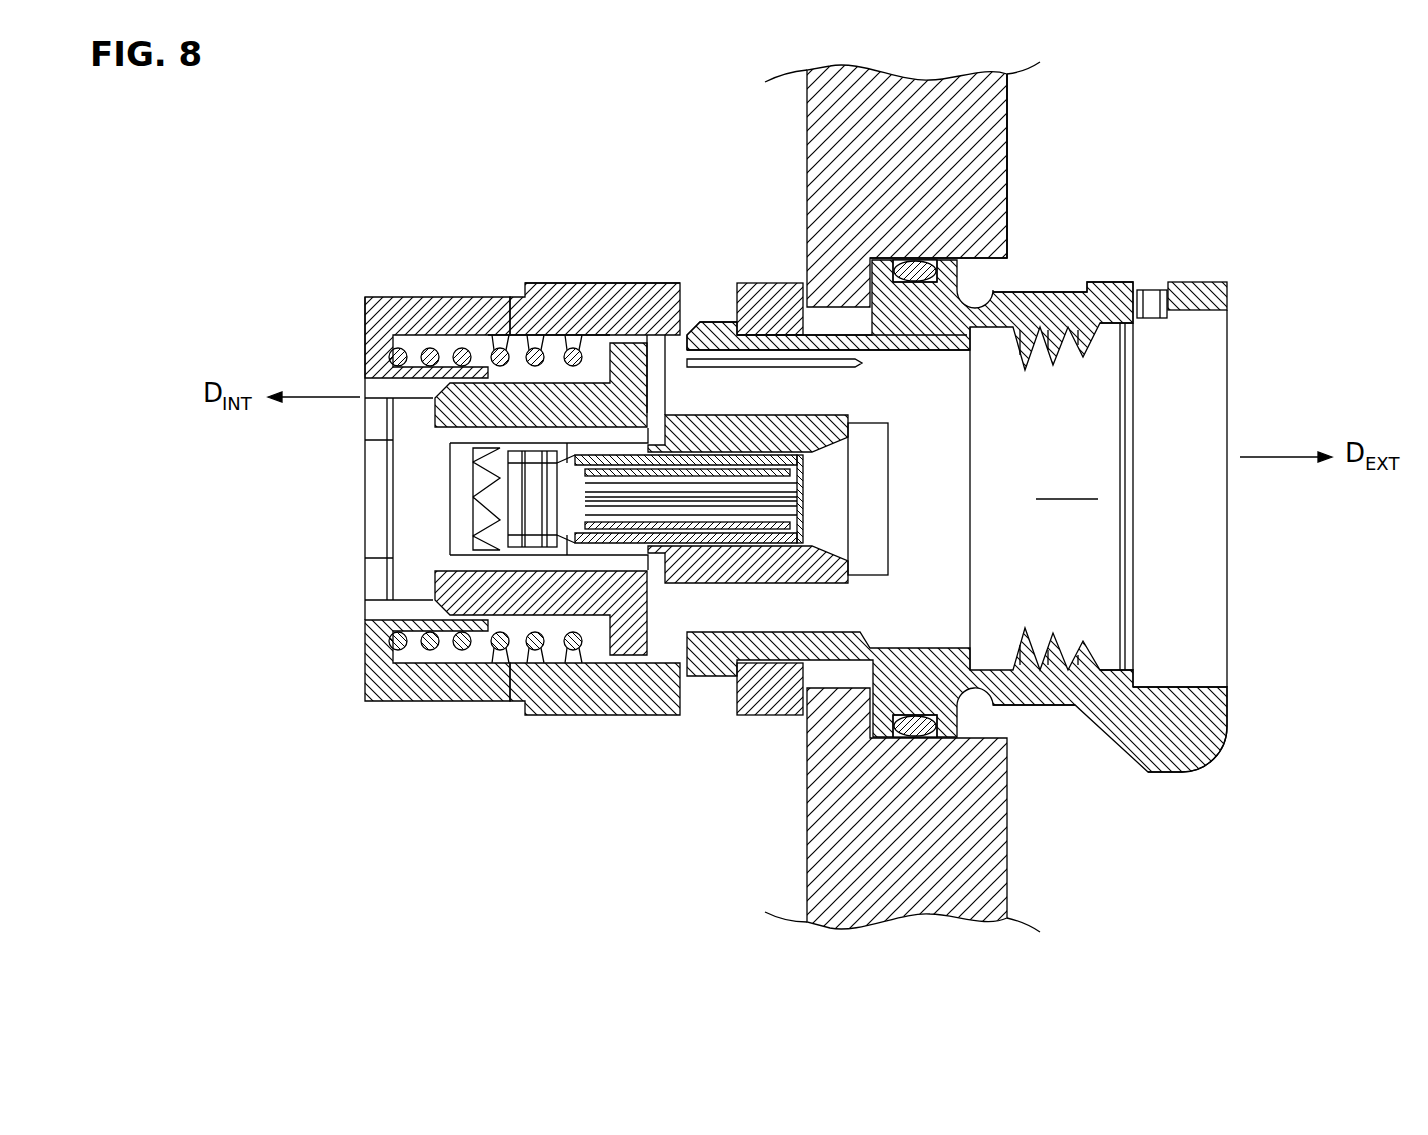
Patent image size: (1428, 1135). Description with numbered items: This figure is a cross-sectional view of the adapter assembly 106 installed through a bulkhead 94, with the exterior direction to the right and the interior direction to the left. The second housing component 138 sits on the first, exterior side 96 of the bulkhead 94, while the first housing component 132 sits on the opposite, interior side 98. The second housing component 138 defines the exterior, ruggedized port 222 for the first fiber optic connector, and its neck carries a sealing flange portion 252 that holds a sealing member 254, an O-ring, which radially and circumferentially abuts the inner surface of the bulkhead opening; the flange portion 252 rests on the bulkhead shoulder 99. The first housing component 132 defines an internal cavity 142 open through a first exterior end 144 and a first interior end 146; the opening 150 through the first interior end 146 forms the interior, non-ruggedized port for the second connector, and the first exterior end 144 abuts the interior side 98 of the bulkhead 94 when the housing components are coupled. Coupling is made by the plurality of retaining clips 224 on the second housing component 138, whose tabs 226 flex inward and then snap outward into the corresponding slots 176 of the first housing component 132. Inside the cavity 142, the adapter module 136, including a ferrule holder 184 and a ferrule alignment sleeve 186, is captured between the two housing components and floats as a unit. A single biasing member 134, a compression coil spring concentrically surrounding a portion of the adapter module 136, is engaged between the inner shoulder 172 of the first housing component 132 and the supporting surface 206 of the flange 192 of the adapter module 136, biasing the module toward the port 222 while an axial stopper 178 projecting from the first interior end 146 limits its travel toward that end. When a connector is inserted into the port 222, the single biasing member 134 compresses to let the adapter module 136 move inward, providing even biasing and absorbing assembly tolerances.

The bulkhead 94 is at (990, 117).
The first side 96 is at (1012, 171).
The second side 98 is at (805, 143).
The bulkhead shoulder 99 is at (843, 292).
The adapter assembly 106 is at (276, 162).
The first housing component 132 is at (584, 344).
The single biasing member 134 is at (537, 350).
The adapter module 136 is at (858, 411).
The second housing component 138 is at (1112, 285).
The internal cavity 142 is at (592, 345).
The first exterior end 144 is at (1226, 266).
The first interior end 146 is at (365, 268).
The opening 150 is at (377, 505).
The inner shoulder 172 is at (398, 337).
The slots 176 is at (703, 302).
The axial stopper 178 is at (498, 352).
The ferrule holder 184 is at (755, 420).
The ferrule alignment sleeve 186 is at (800, 482).
The flange 192 is at (628, 650).
The supporting surface 206 is at (598, 661).
The port 222 is at (1051, 496).
The retaining clips 224 is at (745, 348).
The tabs 226 is at (721, 330).
The sealing flange portion 252 is at (893, 290).
The sealing member 254 is at (938, 265).